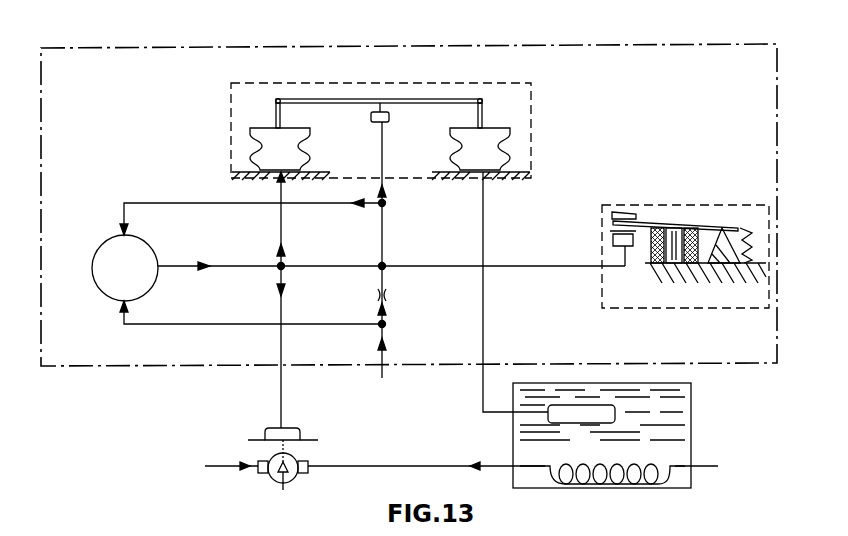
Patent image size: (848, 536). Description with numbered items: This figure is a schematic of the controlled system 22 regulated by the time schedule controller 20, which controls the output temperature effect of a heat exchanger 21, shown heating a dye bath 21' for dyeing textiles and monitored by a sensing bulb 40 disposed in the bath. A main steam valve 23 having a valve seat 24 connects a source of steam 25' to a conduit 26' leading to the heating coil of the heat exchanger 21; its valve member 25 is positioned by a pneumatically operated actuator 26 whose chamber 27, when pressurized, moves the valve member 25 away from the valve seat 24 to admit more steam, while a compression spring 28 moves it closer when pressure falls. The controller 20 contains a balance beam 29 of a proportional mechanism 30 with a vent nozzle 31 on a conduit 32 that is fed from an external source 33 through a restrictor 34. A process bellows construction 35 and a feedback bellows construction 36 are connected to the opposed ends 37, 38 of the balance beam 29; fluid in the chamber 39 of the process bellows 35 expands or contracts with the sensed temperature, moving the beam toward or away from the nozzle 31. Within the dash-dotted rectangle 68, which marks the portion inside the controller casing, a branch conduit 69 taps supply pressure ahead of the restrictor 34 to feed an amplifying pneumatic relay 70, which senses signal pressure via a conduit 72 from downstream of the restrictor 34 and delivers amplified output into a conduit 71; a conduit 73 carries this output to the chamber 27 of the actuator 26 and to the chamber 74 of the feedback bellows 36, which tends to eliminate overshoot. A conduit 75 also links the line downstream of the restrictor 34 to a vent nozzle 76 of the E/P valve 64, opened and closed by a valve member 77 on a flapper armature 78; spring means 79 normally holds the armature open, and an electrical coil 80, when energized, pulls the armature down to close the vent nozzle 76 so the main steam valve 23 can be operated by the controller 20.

The time schedule controller 20 is at (92, 46).
The heat exchanger 21 is at (594, 499).
The dye bath 21' is at (637, 438).
The controlled system 22 is at (722, 411).
The main steam valve 23 is at (270, 462).
The valve seat 24 is at (309, 466).
The valve member 25 is at (299, 487).
The source of steam 25' is at (218, 498).
The pneumatically operated actuator 26 is at (300, 414).
The conduit 26' is at (435, 446).
The chamber 27 is at (300, 436).
The compression spring 28 is at (270, 446).
The balance beam 29 is at (425, 99).
The proportional mechanism 30 is at (532, 103).
The vent opening device or nozzle 31 is at (392, 115).
The conduit 32 is at (384, 232).
The external source 33 is at (384, 376).
The restrictor 34 is at (390, 293).
The process bellows construction 35 is at (512, 148).
The feedback bellows construction 36 is at (249, 148).
The end of balance beam 37 is at (483, 99).
The end of balance beam 38 is at (282, 98).
The chamber 39 is at (511, 161).
The sensing bulb 40 is at (590, 405).
The E/P valve 64 is at (700, 308).
The dash-dotted rectangle 68 is at (779, 157).
The branch conduit 69 is at (302, 324).
The amplifying pneumatic relay 70 is at (110, 242).
The conduit 71 is at (180, 266).
The conduit 72 is at (175, 203).
The conduit 73 is at (280, 312).
The chamber 74 is at (296, 152).
The conduit 75 is at (525, 266).
The vent nozzle 76 is at (612, 238).
The valve member 77 is at (622, 212).
The flapper armature 78 is at (663, 222).
The spring means 79 is at (754, 243).
The electrical coil 80 is at (655, 250).